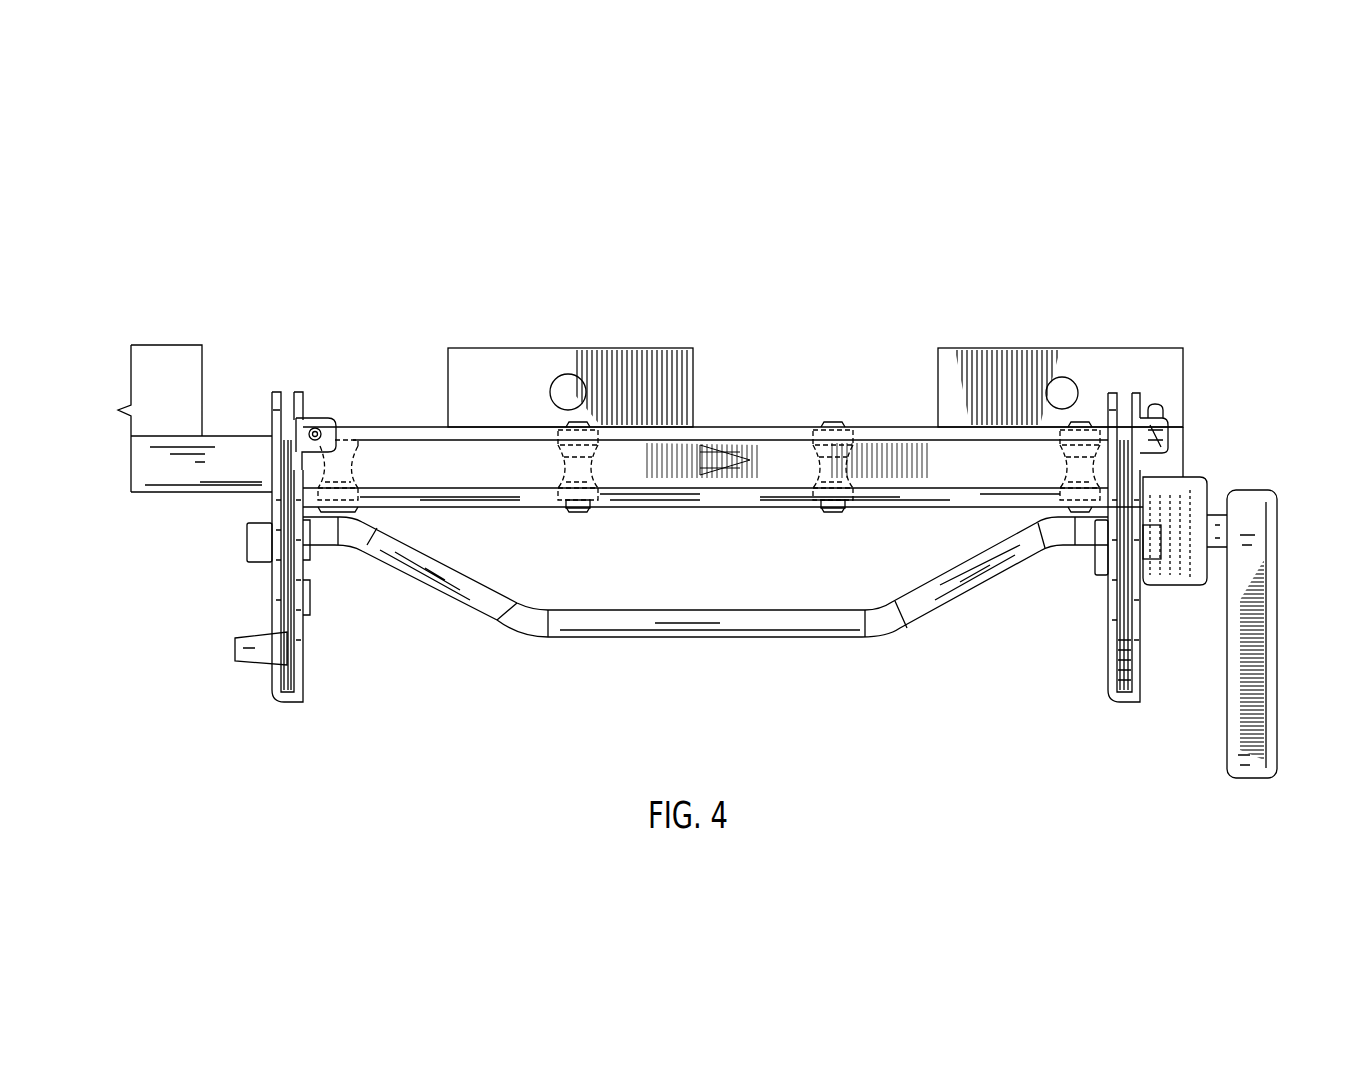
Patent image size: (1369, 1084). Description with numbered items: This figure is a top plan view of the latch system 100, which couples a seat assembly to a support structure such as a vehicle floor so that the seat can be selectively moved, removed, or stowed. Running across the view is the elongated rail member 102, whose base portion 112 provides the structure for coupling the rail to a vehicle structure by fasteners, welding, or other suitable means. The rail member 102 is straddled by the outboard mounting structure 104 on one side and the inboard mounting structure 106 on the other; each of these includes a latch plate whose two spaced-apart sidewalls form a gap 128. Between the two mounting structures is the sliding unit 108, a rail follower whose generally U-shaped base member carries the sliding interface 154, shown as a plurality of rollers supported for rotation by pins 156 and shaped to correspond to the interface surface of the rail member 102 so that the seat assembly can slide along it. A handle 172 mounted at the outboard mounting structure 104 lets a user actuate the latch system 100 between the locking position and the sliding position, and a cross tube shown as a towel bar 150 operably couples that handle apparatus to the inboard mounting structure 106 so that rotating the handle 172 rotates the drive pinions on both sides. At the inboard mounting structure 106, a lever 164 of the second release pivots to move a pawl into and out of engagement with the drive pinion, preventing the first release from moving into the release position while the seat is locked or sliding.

The latch system 100 is at (780, 205).
The rail member 102 is at (104, 464).
The outboard mounting structure 104 is at (1119, 731).
The inboard mounting structure 106 is at (291, 732).
The sliding unit 108 is at (407, 410).
The base portion 112 is at (165, 358).
The gap 128 is at (287, 387).
The towel bar 150 is at (681, 625).
The sliding interface 154 is at (350, 428).
The pins 156 is at (578, 513).
The lever 164 is at (256, 650).
The handle 172 is at (1272, 718).